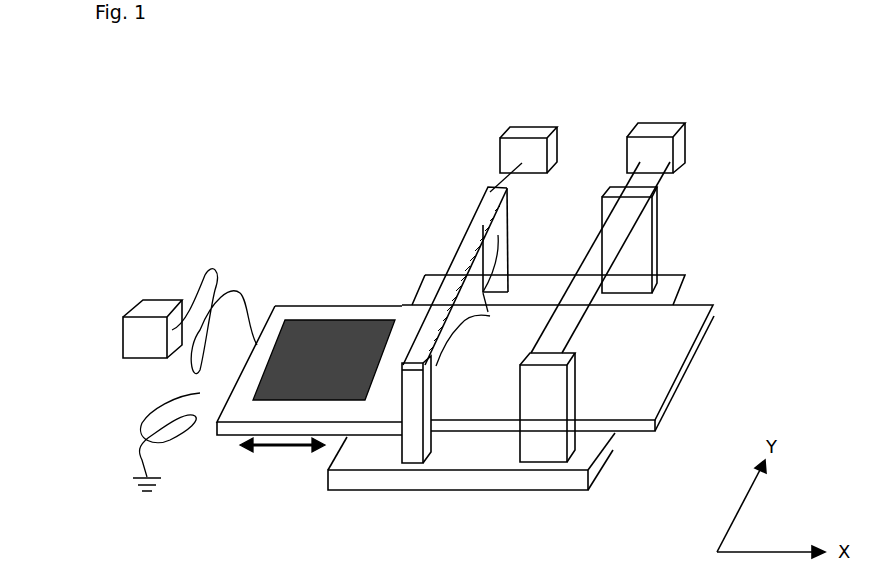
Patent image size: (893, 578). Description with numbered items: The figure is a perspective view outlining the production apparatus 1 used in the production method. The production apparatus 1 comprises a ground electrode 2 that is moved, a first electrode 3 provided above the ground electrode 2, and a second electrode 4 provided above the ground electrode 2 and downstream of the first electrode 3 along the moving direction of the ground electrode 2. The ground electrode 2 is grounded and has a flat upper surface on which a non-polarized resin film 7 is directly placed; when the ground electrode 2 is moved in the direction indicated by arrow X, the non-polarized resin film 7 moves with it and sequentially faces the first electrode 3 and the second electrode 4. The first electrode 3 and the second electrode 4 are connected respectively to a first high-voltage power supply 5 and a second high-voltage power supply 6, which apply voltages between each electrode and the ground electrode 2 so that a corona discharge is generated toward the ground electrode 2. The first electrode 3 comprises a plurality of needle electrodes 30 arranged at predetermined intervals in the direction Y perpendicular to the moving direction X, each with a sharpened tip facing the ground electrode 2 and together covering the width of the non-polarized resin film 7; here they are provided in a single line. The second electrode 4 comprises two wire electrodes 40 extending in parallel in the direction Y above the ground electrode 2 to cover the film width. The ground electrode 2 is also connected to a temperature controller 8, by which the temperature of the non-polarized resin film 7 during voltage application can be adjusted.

The production apparatus 1 is at (722, 222).
The ground electrode 2 is at (352, 316).
The first electrode 3 is at (472, 295).
The second electrode 4 is at (600, 372).
The first high-voltage power supply 5 is at (520, 127).
The second high-voltage power supply 6 is at (663, 125).
The non-polarized resin film 7 is at (300, 320).
The temperature controller 8 is at (145, 300).
The needle electrode 30 is at (493, 230).
The wire electrode 40 is at (565, 300).